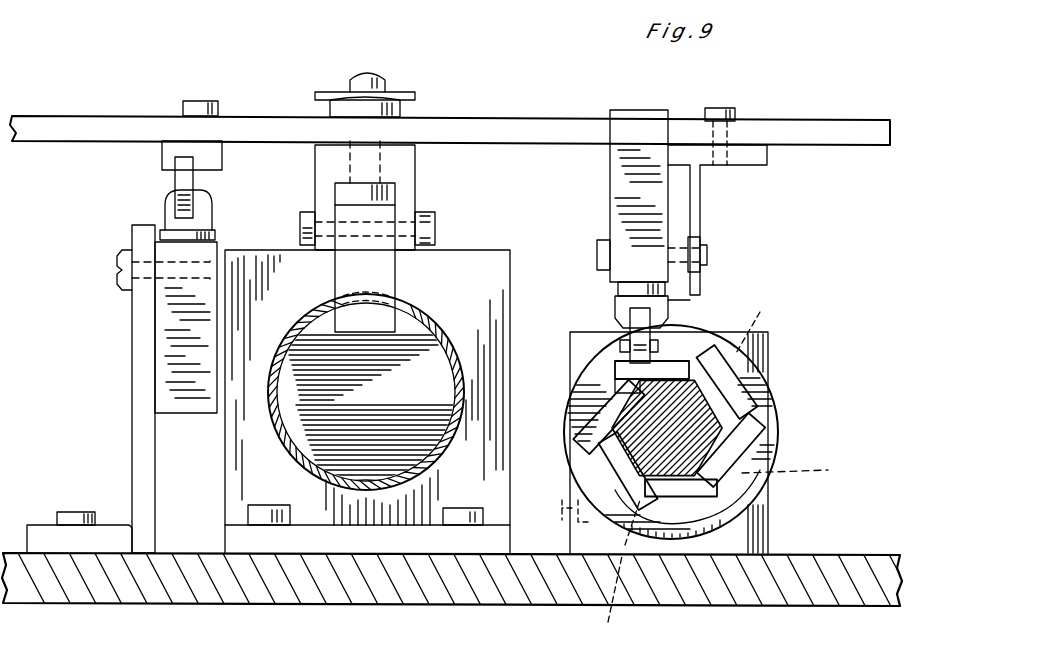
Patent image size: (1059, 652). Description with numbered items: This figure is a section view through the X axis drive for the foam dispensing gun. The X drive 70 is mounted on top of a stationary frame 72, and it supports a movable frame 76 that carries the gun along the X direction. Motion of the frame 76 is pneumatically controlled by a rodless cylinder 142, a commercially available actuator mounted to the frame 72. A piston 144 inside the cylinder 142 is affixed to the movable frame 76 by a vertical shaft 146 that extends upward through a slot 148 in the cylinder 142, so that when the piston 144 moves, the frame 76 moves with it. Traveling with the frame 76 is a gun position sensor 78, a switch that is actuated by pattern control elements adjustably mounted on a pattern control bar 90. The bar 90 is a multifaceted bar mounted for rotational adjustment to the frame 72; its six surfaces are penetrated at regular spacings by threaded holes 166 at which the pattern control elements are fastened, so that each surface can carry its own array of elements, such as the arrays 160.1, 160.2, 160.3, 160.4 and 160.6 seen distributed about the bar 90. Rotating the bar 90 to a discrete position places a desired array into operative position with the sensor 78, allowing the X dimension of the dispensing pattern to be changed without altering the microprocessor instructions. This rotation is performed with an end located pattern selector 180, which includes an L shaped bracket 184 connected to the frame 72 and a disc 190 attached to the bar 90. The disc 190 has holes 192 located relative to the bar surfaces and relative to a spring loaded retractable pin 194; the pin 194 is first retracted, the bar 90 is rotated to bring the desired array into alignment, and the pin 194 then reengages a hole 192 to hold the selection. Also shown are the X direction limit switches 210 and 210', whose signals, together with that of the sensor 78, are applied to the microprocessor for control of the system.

The X drive 70 is at (524, 240).
The frame 72 is at (406, 583).
The frame 76 is at (497, 120).
The gun position sensor 78 is at (635, 113).
The pattern control bar 90 is at (745, 500).
The rodless cylinder 142 is at (290, 425).
The piston 144 is at (430, 365).
The vertical shaft 146 is at (335, 275).
The slot 148 is at (410, 300).
The array of pattern control elements 160.1 is at (620, 372).
The array of pattern control elements 160.2 is at (770, 372).
The array of pattern control elements 160.3 is at (765, 445).
The array of pattern control elements 160.4 is at (745, 545).
The array of pattern control elements 160.6 is at (600, 440).
The threaded holes 166 is at (693, 420).
The pattern selector 180 is at (805, 330).
The L shaped bracket 184 is at (775, 330).
The disc 190 is at (685, 327).
The holes 192 is at (696, 470).
The spring loaded retractable pin 194 is at (772, 395).
The X direction limit switch 210 is at (367, 369).
The X direction limit switch 210' is at (124, 347).